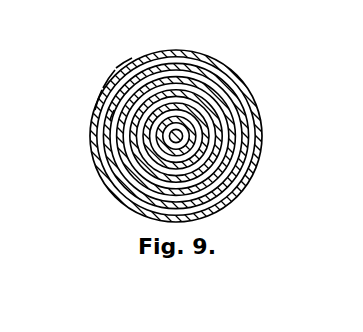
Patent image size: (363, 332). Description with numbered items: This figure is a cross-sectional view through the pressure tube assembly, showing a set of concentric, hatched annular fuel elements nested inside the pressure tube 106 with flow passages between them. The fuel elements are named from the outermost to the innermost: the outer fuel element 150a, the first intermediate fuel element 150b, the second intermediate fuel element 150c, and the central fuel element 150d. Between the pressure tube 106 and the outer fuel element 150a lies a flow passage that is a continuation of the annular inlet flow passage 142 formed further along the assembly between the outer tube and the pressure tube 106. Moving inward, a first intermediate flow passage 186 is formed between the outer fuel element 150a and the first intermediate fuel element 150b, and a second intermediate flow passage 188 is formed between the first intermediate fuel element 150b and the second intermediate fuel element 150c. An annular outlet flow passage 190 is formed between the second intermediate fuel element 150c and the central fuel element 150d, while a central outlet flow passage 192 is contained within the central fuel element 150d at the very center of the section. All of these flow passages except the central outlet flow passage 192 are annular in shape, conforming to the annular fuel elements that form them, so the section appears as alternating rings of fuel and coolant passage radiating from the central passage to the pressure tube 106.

The pressure tube 106 is at (196, 53).
The annular inlet flow passage 142 is at (242, 165).
The first intermediate flow passage 186 is at (230, 150).
The second intermediate flow passage 188 is at (213, 140).
The annular outlet flow passage 190 is at (198, 135).
The central outlet flow passage 192 is at (176, 138).
The outer fuel element 150a is at (110, 127).
The first intermediate fuel element 150b is at (102, 108).
The second intermediate fuel element 150c is at (110, 87).
The central fuel element 150d is at (124, 75).